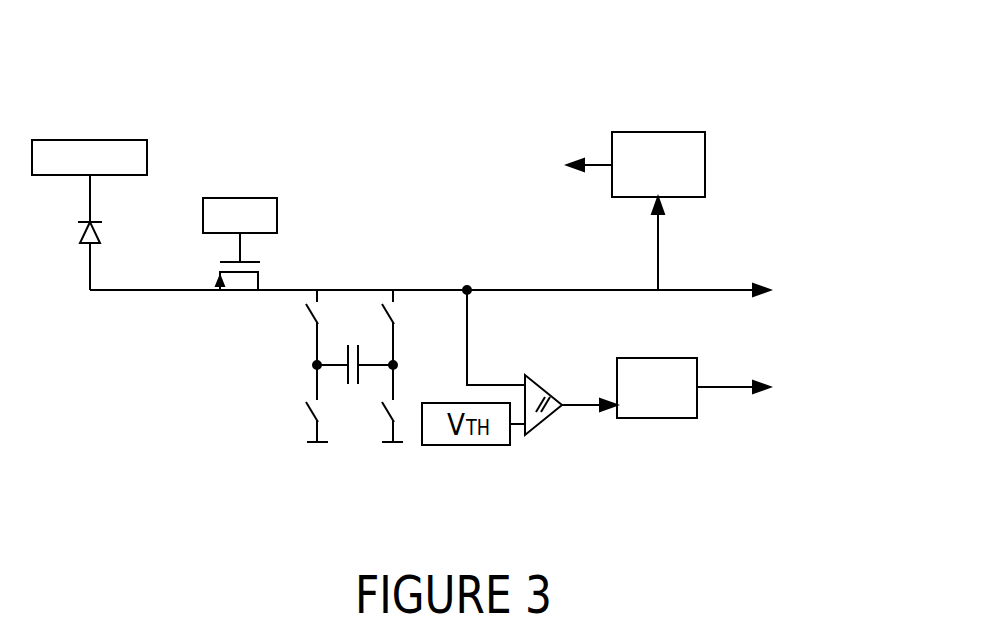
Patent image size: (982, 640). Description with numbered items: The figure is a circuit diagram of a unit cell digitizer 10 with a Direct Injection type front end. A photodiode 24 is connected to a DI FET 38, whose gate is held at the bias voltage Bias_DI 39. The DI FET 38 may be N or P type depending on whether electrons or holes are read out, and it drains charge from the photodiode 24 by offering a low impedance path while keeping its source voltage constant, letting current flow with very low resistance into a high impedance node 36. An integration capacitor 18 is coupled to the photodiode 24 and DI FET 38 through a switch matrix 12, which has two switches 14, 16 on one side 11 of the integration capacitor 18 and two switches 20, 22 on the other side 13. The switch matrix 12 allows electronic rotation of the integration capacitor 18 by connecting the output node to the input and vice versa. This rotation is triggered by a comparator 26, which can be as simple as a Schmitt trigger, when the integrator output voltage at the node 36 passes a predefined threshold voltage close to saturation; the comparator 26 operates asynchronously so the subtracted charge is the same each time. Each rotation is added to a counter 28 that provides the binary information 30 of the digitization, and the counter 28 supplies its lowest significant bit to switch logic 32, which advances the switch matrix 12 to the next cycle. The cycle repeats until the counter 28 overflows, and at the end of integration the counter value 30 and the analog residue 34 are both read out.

The unit cell digitizer 10 is at (220, 89).
The photodiode 24 is at (79, 227).
The Bias_DI 39 is at (278, 215).
The DI FET 38 is at (264, 274).
The switch 14 is at (313, 310).
The switch 20 is at (388, 310).
The one side of the integration capacitor 11 is at (302, 347).
The other side of the integration capacitor 13 is at (408, 347).
The integration capacitor 18 is at (357, 392).
The switch 16 is at (306, 403).
The switch 22 is at (384, 403).
The switch matrix 12 is at (282, 443).
The high impedance node 36 is at (467, 289).
The comparator 26 is at (545, 383).
The counter 28 is at (657, 420).
The switch logic 32 is at (657, 132).
The analog residue 34 is at (752, 290).
The binary information 30 is at (792, 388).